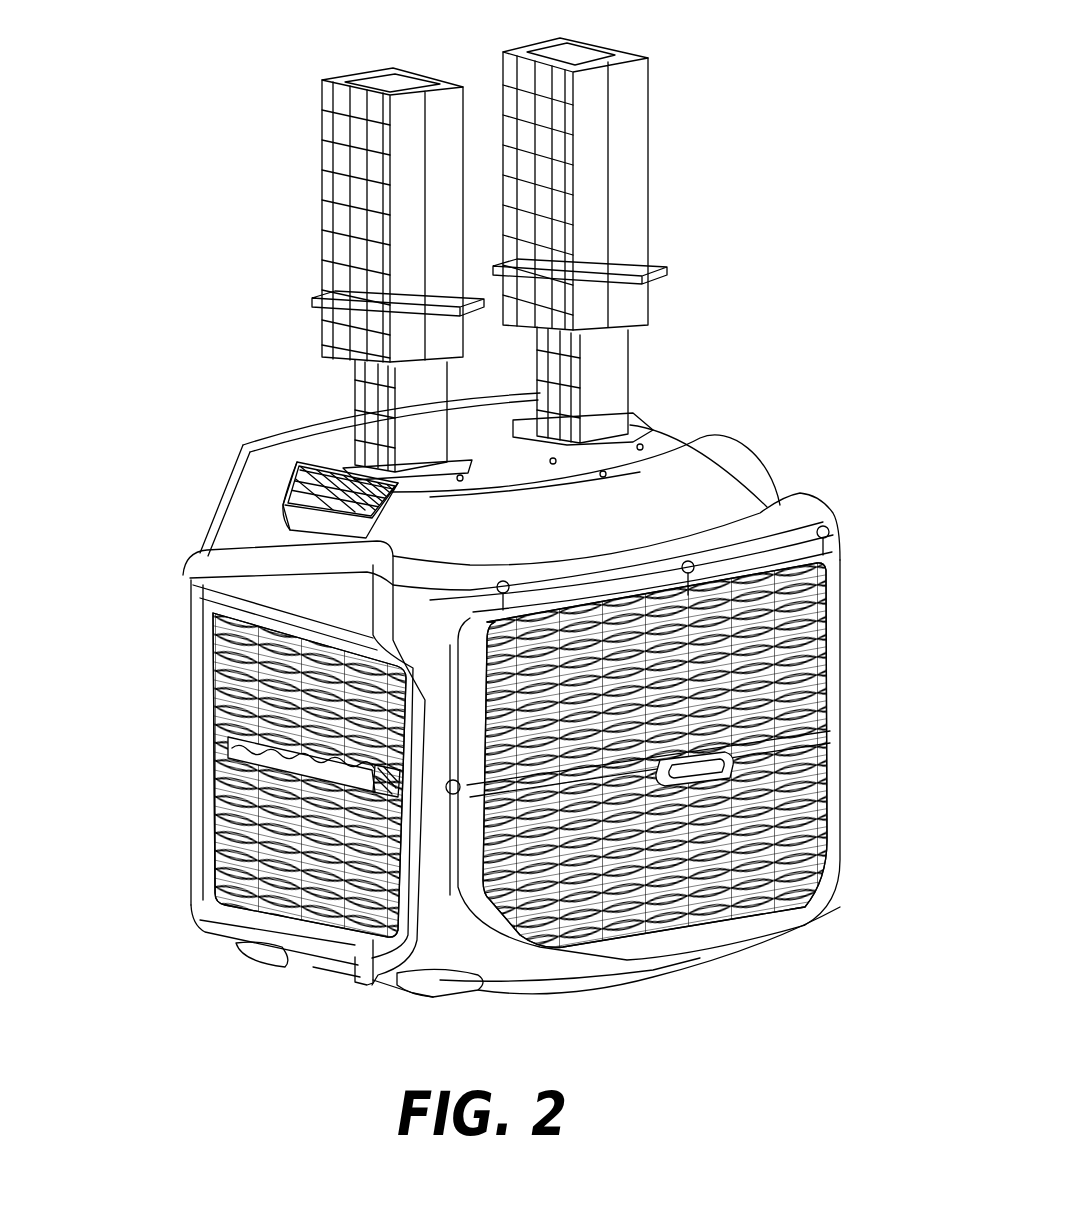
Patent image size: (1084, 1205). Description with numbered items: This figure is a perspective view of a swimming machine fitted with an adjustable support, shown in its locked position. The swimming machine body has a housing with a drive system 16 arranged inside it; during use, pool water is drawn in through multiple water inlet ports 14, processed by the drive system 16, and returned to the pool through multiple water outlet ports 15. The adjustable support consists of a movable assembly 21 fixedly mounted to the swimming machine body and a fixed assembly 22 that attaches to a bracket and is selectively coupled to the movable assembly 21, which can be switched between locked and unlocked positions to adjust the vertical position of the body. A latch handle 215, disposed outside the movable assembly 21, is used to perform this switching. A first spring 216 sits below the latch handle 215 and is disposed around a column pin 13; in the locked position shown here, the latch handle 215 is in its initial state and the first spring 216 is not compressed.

The column pin 13 is at (255, 444).
The water inlet port 14 is at (230, 863).
The water outlet port 15 is at (788, 673).
The drive system 16 is at (240, 735).
The movable assembly 21 is at (618, 375).
The fixed assembly 22 is at (628, 197).
The latch handle 215 is at (310, 473).
The first spring 216 is at (303, 493).